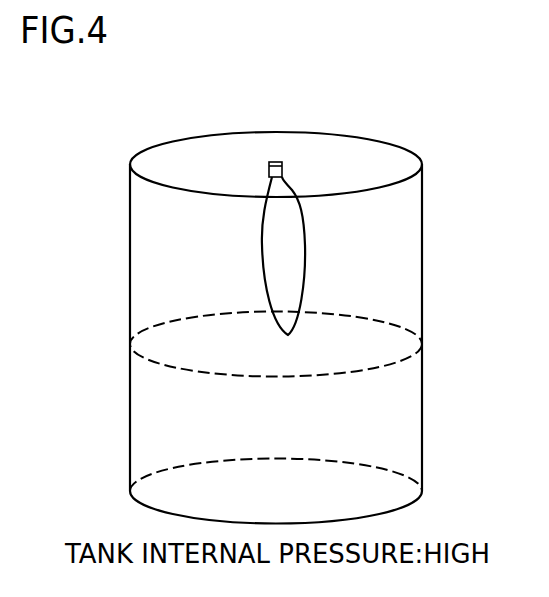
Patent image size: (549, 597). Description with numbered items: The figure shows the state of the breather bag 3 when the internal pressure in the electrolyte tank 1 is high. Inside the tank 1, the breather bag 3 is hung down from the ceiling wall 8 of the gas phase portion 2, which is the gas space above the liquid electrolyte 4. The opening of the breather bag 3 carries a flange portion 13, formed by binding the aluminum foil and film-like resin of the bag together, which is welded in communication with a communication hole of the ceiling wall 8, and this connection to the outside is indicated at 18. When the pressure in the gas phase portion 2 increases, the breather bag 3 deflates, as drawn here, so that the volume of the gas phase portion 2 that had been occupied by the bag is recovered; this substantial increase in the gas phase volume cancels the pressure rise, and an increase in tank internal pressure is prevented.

The tank 1 is at (172, 226).
The gas phase portion 2 is at (172, 275).
The breather bag 3 is at (283, 256).
The liquid fuel 4 is at (353, 425).
The ceiling wall 8 is at (351, 163).
The flange portion 13 is at (269, 168).
The valve cap 18 is at (274, 162).